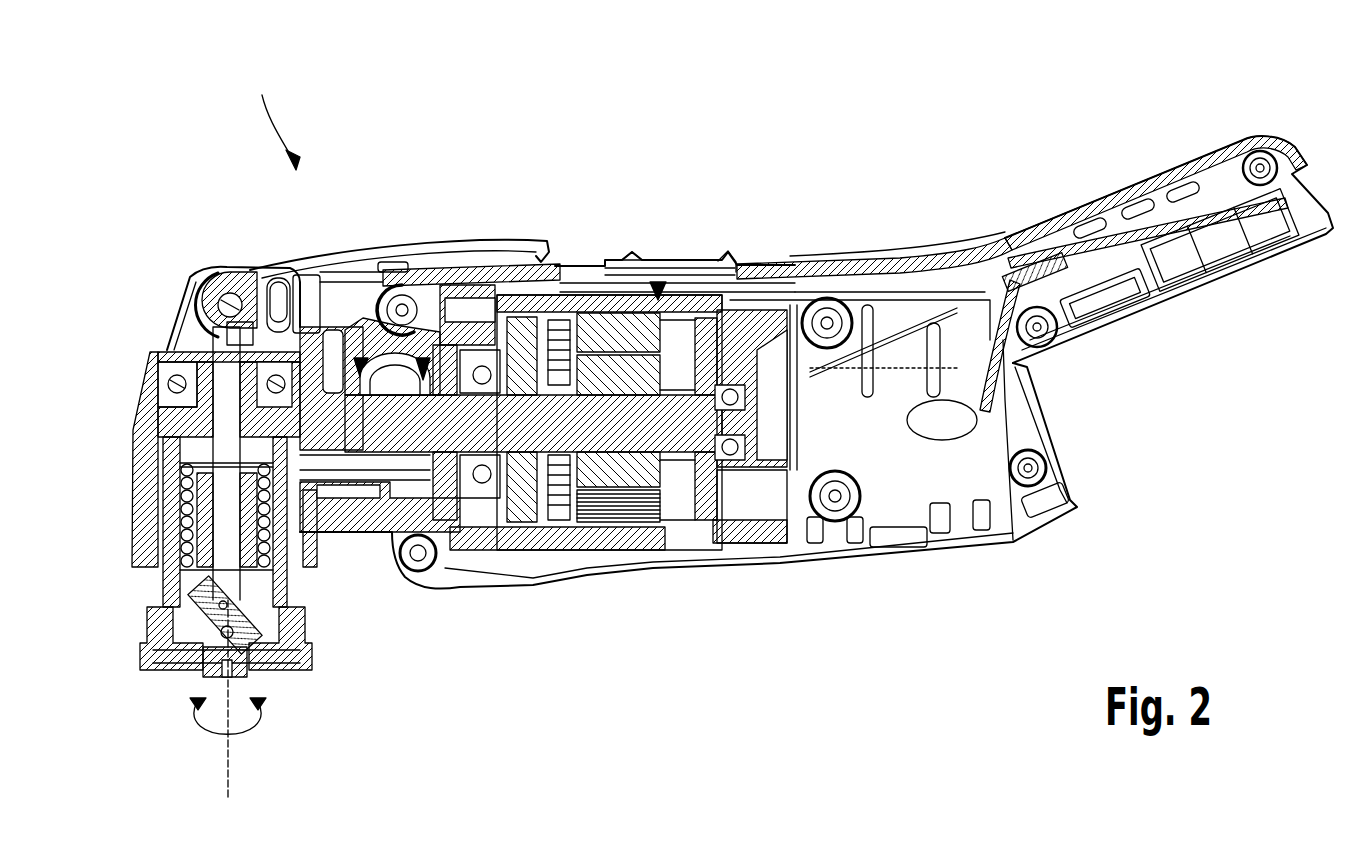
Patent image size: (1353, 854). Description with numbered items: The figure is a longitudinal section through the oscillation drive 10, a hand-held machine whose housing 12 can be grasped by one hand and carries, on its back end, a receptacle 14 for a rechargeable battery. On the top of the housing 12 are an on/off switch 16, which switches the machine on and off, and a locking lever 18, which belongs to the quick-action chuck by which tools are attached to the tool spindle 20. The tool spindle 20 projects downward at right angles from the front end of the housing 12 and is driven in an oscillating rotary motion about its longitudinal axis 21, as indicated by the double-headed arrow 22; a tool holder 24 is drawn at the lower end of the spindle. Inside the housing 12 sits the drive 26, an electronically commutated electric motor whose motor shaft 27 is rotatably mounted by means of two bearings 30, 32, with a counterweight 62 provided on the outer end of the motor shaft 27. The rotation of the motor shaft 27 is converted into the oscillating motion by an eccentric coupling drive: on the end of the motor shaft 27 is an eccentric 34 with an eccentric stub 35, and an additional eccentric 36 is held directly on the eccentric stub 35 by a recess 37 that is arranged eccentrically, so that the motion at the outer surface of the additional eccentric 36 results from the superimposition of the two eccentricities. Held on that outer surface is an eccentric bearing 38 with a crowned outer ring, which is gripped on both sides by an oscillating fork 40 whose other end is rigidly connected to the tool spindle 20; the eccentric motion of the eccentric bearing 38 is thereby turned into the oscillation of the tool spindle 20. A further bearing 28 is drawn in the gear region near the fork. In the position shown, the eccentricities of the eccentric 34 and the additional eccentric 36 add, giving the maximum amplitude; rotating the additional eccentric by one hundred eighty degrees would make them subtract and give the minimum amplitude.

The oscillation drive 10 is at (271, 116).
The housing 12 is at (750, 270).
The receptacle 14 is at (1120, 335).
The on/off switch 16 is at (630, 258).
The locking lever 18 is at (455, 250).
The tool spindle 20 is at (150, 626).
The longitudinal axis 21 is at (232, 786).
The double-headed arrow 22 is at (265, 715).
The tool holder 24 is at (165, 665).
The drive 26 is at (658, 282).
The motor shaft 27 is at (608, 452).
The eccentric bearing 28 is at (360, 358).
The bearing 30 is at (478, 550).
The bearing 32 is at (724, 545).
The eccentric 34 is at (375, 482).
The eccentric stub 35 is at (420, 520).
The additional eccentric 36 is at (482, 345).
The recess 37 is at (423, 358).
The eccentric bearing 38 is at (416, 572).
The oscillating fork 40 is at (340, 328).
The counterweight 62 is at (722, 278).